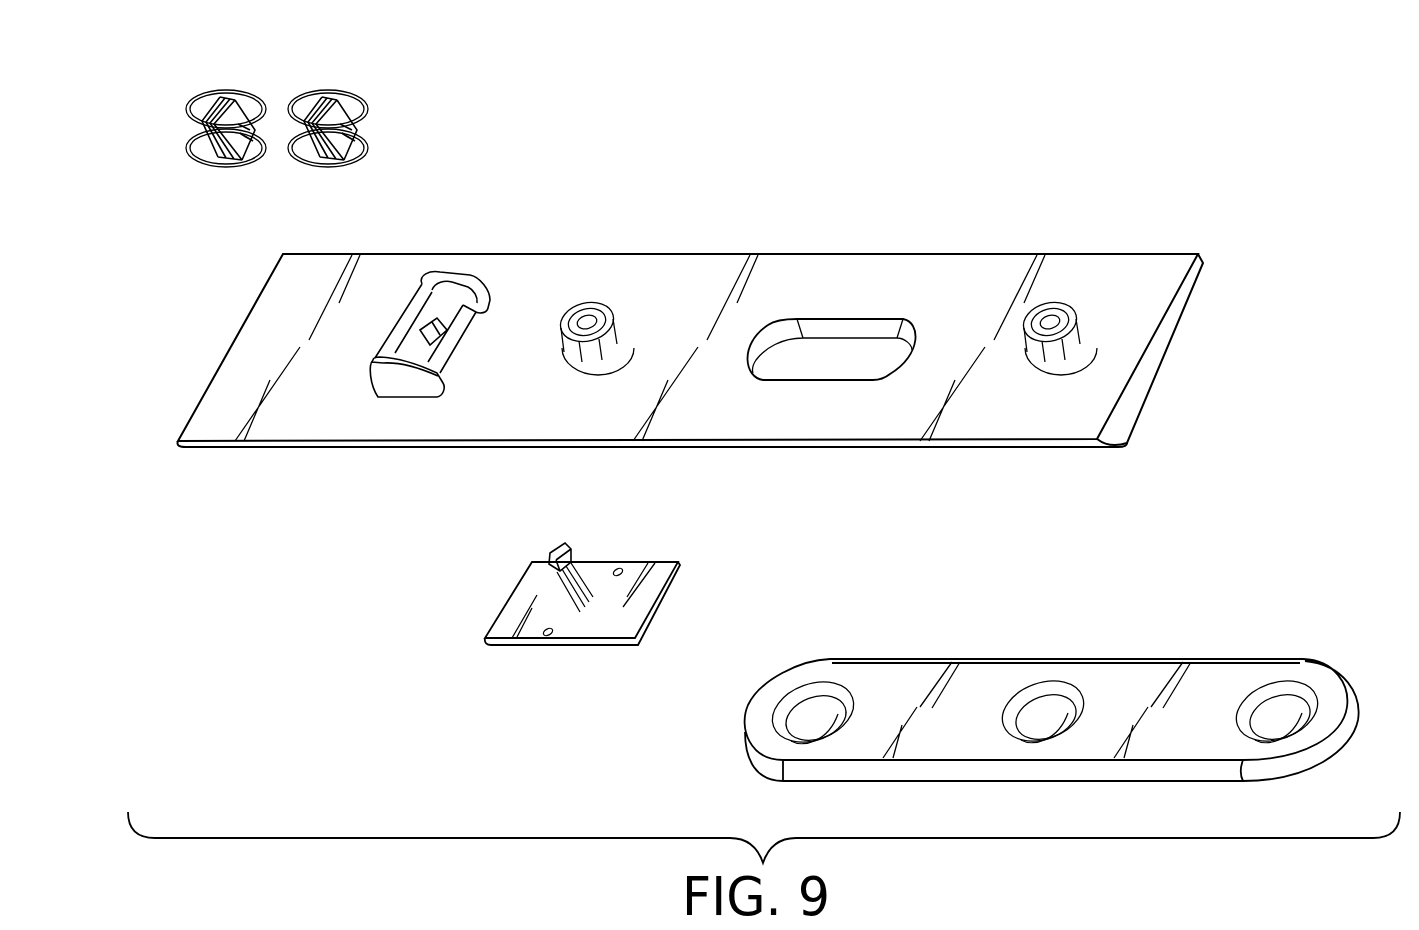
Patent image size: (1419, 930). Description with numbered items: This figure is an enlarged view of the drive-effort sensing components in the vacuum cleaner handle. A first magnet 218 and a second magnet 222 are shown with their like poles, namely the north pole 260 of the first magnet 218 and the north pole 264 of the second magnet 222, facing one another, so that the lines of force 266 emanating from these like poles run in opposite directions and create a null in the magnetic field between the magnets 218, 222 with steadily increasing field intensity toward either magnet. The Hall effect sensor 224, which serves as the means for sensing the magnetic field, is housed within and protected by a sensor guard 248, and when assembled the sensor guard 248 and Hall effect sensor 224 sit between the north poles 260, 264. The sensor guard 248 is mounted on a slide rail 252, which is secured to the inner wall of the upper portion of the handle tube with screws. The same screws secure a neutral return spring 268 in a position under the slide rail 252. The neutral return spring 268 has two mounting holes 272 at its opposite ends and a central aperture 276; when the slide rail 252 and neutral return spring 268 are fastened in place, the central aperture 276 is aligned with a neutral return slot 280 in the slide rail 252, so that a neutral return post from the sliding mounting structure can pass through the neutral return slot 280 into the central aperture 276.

The first magnet 218 is at (200, 124).
The second magnet 222 is at (350, 128).
The Hall effect sensor 224 is at (560, 543).
The sensor guard 248 is at (437, 272).
The slide rail 252 is at (648, 254).
The north pole 260 is at (245, 150).
The north pole 264 is at (313, 150).
The lines of force 266 is at (200, 93).
The neutral return spring 268 is at (1152, 667).
The mounting holes 272 is at (824, 687).
The central aperture 276 is at (1047, 688).
The neutral return slot 280 is at (848, 352).